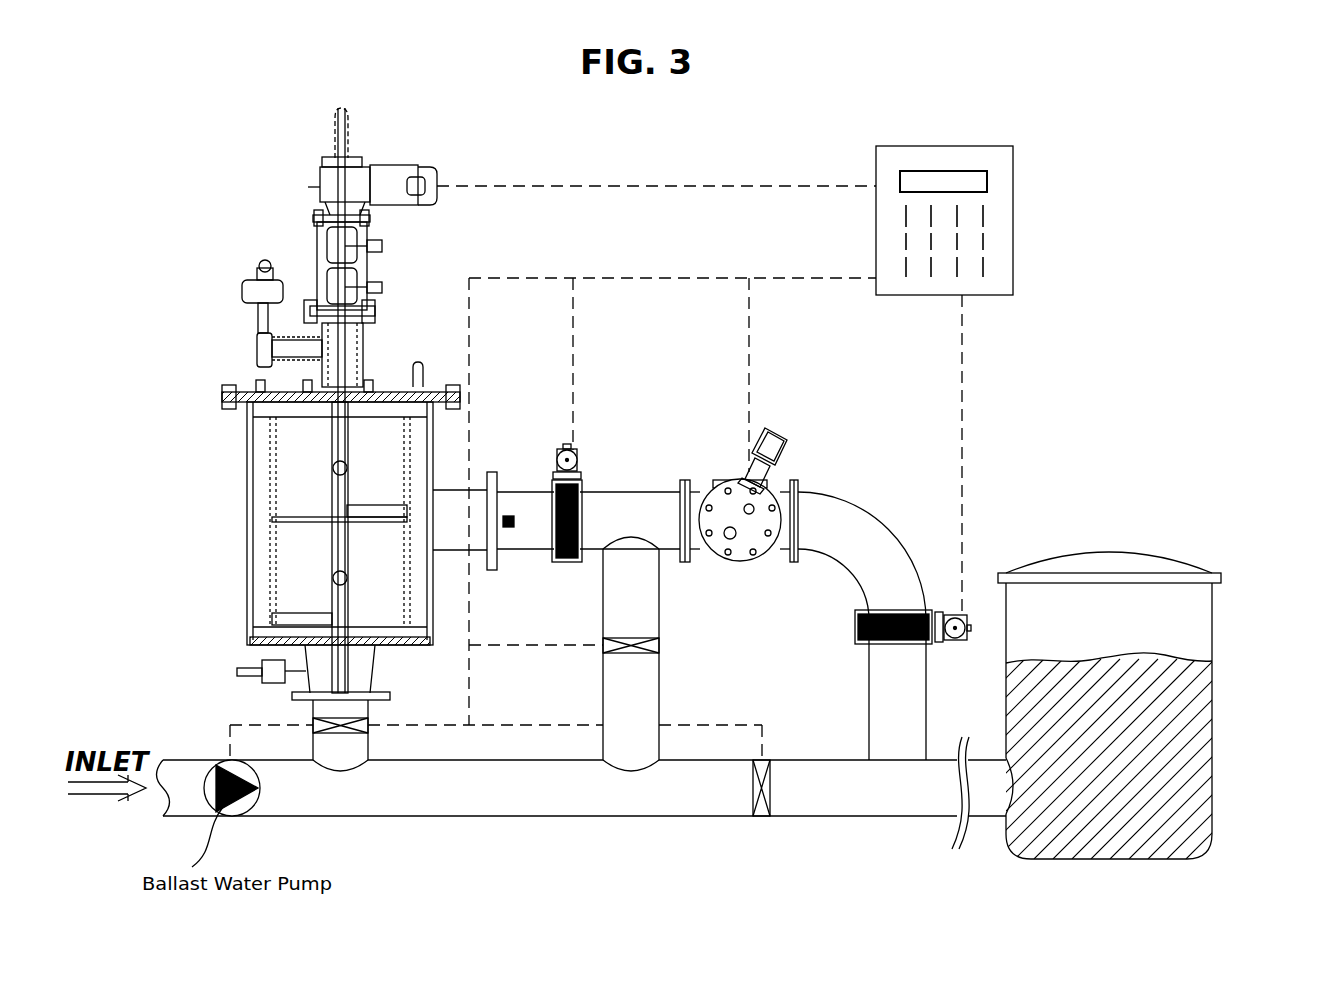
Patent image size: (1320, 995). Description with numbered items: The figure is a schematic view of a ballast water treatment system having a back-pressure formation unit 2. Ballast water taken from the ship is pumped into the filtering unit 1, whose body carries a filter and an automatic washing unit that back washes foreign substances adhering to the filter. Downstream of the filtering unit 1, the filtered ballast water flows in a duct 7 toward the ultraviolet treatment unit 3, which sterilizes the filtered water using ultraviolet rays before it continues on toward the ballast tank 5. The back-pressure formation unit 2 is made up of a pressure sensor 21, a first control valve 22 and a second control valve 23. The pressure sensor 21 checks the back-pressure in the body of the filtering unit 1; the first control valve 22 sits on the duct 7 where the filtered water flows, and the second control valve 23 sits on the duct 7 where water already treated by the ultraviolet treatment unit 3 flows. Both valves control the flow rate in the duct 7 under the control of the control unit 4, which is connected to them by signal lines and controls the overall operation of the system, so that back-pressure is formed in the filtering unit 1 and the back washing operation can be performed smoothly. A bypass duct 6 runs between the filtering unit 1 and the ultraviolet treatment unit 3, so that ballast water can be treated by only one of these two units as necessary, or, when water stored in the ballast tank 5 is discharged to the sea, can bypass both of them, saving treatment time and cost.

The filtering unit 1 is at (210, 364).
The back-pressure formation unit 2 is at (700, 336).
The pressure sensor 21 is at (512, 515).
The first control valve 22 is at (580, 463).
The second control valve 23 is at (956, 618).
The ultraviolet treatment unit 3 is at (800, 460).
The control unit 4 is at (1013, 146).
The ballast tank 5 is at (1238, 532).
The bypass duct 6 is at (603, 742).
The duct 7 is at (868, 507).